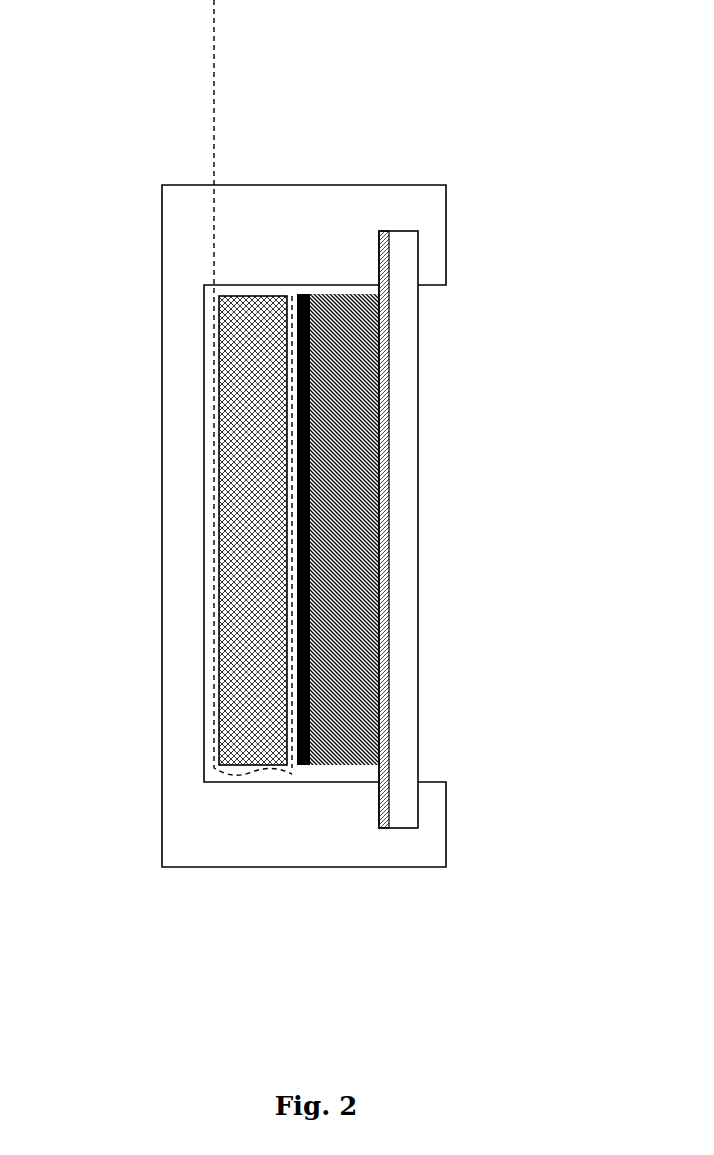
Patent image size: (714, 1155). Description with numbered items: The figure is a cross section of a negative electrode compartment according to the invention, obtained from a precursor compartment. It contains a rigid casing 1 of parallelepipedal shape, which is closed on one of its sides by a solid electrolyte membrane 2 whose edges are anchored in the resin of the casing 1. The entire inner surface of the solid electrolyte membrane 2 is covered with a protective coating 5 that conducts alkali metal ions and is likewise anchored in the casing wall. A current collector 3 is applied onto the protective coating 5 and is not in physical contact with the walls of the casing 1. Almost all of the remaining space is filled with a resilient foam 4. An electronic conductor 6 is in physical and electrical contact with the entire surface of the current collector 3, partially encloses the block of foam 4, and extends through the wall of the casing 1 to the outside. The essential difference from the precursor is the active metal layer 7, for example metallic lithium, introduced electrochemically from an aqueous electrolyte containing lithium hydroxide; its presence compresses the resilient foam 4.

The rigid casing 1 is at (403, 188).
The solid electrolyte membrane 2 is at (418, 330).
The current collector 3 is at (308, 585).
The resilient foam 4 is at (262, 542).
The protective coating 5 is at (388, 428).
The electronic conductor 6 is at (217, 75).
The active metal layer 7 is at (340, 615).